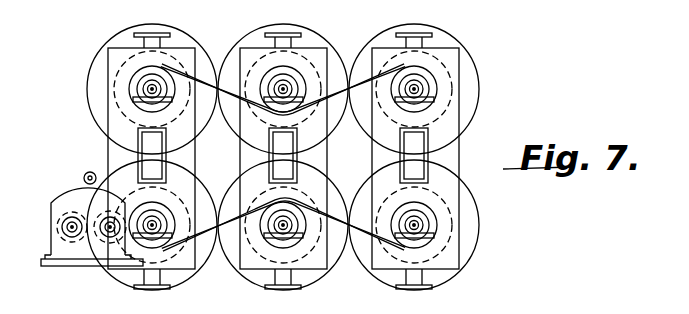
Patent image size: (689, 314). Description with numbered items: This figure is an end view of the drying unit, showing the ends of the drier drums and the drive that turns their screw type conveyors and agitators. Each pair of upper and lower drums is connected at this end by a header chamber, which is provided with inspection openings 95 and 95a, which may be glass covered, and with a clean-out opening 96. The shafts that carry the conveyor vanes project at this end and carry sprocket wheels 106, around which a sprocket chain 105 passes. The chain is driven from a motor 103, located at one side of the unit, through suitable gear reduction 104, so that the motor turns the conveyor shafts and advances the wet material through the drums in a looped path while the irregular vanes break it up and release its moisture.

The inspection opening 95 is at (400, 34).
The inspection opening 95a is at (417, 142).
The clean-out opening 96 is at (426, 289).
The motor 103 is at (52, 204).
The gear reduction 104 is at (87, 252).
The sprocket chain 105 is at (197, 268).
The sprocket wheels 106 is at (272, 68).